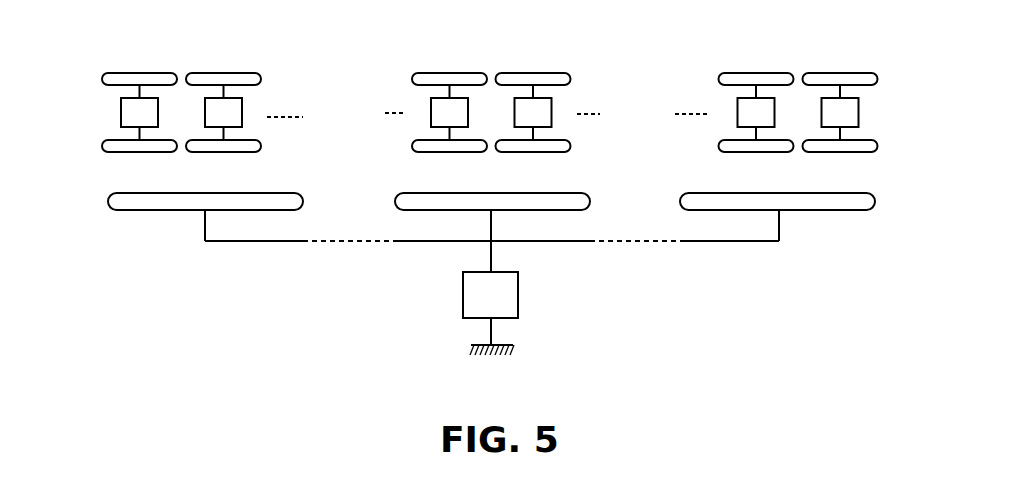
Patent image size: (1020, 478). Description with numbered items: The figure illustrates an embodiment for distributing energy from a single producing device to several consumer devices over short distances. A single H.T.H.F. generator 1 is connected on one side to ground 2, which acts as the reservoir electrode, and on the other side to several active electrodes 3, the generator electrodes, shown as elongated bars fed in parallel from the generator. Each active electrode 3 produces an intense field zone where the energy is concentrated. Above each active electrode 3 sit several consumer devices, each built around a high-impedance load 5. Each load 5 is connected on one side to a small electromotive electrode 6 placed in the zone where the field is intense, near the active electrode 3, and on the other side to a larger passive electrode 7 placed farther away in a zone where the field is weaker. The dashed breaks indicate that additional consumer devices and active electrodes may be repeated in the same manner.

The H.T.H.F. generator 1 is at (460, 305).
The ground (reservoir electrode) 2 is at (513, 344).
The active electrode 3 is at (303, 193).
The high-impedance load 5 is at (120, 120).
The electromotive electrode 6 is at (572, 147).
The passive electrode 7 is at (877, 82).